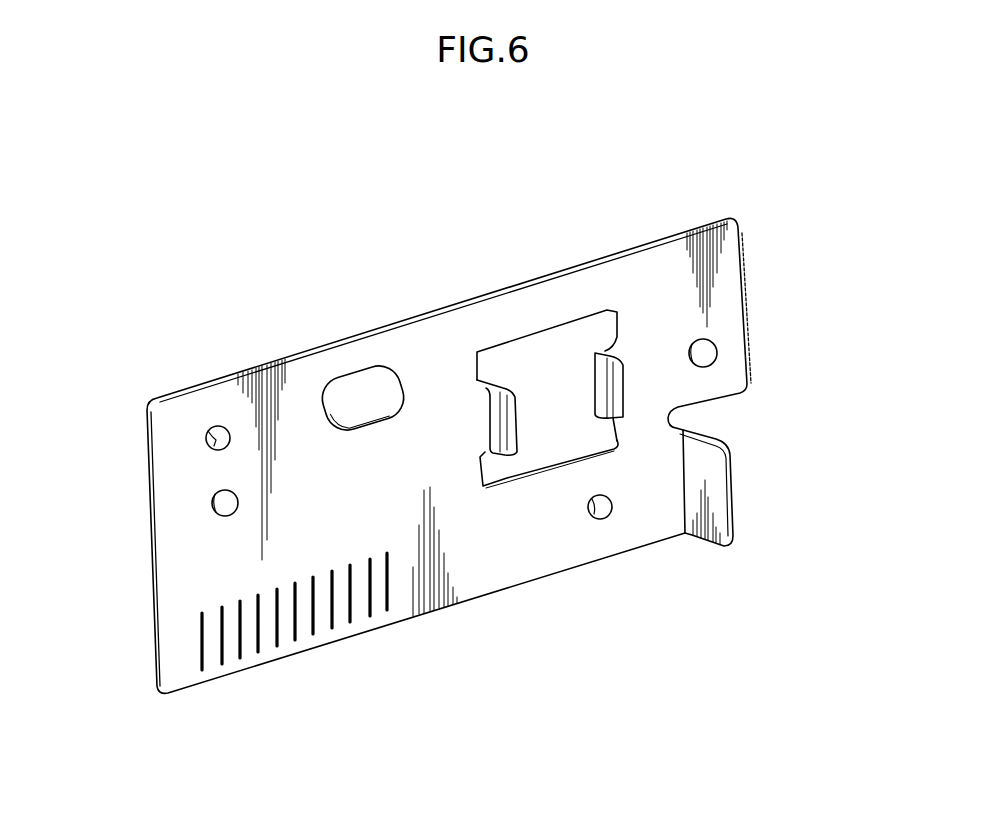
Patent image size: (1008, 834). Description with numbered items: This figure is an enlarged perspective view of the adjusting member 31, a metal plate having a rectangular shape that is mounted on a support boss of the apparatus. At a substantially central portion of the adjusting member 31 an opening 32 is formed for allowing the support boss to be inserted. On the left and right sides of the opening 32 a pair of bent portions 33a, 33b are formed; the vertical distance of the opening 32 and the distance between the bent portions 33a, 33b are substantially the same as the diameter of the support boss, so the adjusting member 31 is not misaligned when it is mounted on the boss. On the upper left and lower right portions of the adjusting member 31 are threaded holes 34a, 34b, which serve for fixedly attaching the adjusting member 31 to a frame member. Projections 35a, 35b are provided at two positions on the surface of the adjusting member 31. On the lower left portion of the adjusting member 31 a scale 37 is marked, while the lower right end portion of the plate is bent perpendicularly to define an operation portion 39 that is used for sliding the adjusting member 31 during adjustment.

The adjusting member 31 is at (302, 315).
The opening 32 is at (543, 348).
The bent portion 33a is at (500, 415).
The bent portion 33b is at (620, 372).
The threaded hole 34a is at (210, 430).
The threaded hole 34b is at (608, 520).
The projection 35a is at (212, 500).
The projection 35b is at (716, 345).
The scale 37 is at (258, 640).
The operation portion 39 is at (740, 500).